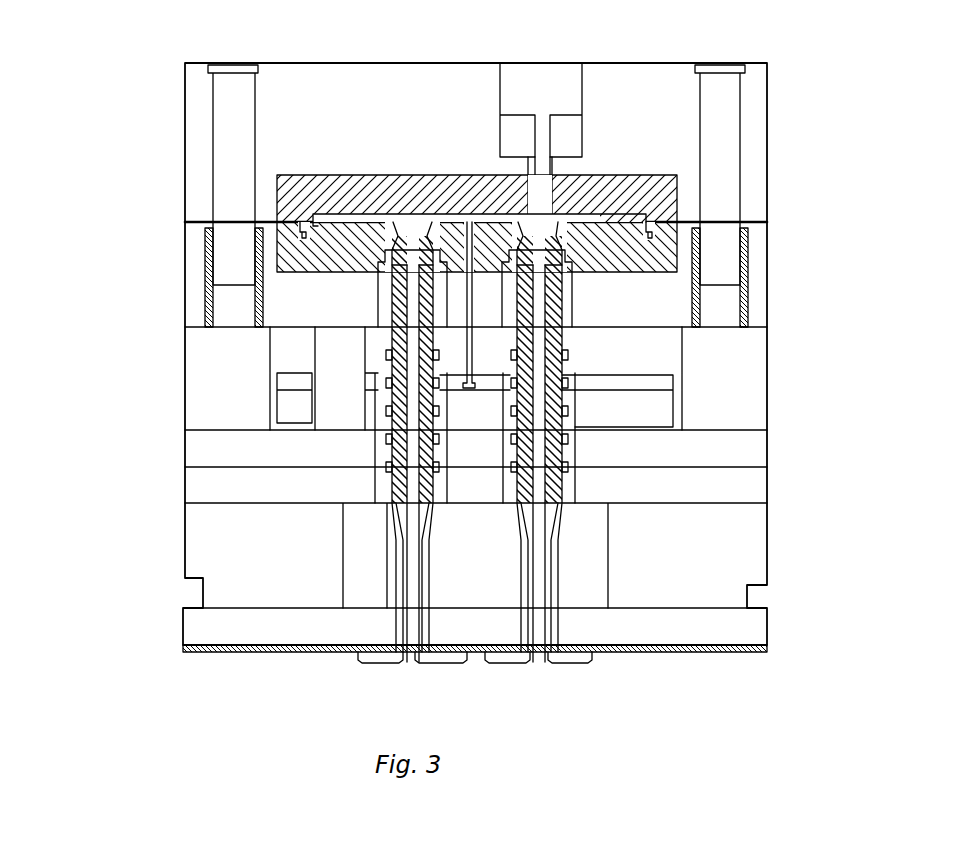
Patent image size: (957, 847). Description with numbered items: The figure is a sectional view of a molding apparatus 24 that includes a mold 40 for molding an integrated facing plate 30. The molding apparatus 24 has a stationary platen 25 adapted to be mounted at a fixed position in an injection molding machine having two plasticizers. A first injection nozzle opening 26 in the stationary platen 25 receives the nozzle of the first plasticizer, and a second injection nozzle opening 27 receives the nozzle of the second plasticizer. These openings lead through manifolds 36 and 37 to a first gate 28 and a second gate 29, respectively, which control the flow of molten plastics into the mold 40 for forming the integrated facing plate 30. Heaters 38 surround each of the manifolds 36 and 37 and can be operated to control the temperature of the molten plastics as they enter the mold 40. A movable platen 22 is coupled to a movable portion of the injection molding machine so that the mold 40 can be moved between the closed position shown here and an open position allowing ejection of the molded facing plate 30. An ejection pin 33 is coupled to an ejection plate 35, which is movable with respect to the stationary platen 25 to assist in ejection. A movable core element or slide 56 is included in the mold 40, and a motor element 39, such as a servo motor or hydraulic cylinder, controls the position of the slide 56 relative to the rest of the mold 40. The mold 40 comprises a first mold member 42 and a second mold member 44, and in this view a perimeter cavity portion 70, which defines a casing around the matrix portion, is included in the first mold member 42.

The movable platen 22 is at (760, 110).
The molding apparatus 24 is at (128, 85).
The stationary platen 25 is at (185, 625).
The first injection nozzle opening 26 is at (410, 660).
The second injection nozzle opening 27 is at (540, 662).
The first gate 28 is at (393, 250).
The second gate 29 is at (575, 280).
The integrated facing plate 30 is at (358, 217).
The ejection pin 33 is at (472, 388).
The ejection plate 35 is at (667, 410).
The manifold 36 is at (397, 480).
The manifold 37 is at (563, 480).
The heaters 38 is at (387, 438).
The motor element 39 is at (577, 85).
The mold 40 is at (637, 178).
The first mold member 42 is at (317, 273).
The second mold member 44 is at (327, 178).
The movable core element or slide 56 is at (537, 173).
The perimeter cavity portion 70 is at (635, 247).